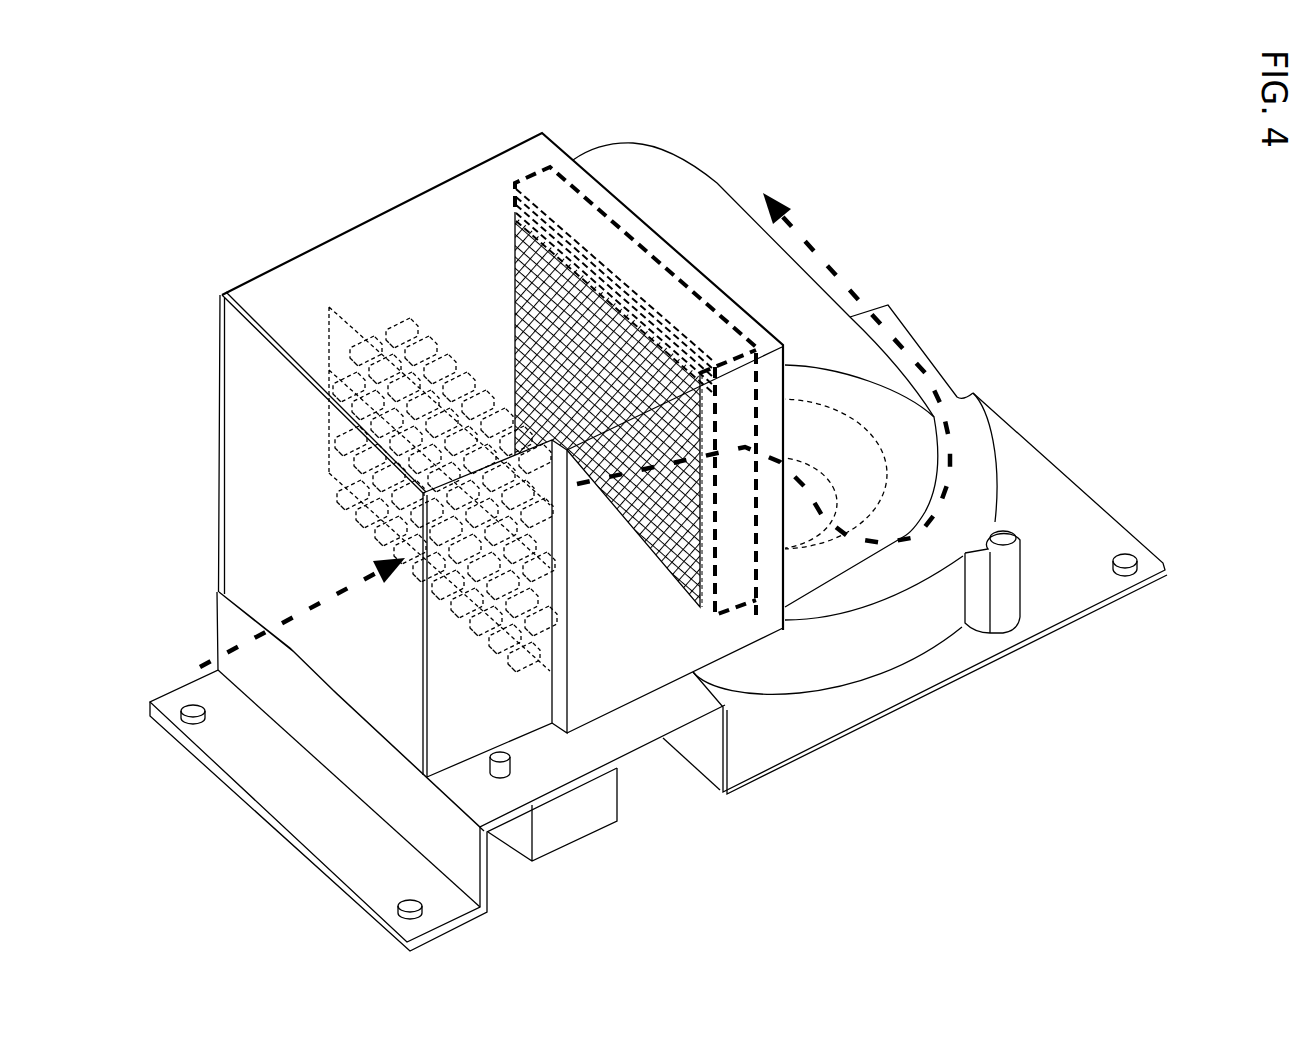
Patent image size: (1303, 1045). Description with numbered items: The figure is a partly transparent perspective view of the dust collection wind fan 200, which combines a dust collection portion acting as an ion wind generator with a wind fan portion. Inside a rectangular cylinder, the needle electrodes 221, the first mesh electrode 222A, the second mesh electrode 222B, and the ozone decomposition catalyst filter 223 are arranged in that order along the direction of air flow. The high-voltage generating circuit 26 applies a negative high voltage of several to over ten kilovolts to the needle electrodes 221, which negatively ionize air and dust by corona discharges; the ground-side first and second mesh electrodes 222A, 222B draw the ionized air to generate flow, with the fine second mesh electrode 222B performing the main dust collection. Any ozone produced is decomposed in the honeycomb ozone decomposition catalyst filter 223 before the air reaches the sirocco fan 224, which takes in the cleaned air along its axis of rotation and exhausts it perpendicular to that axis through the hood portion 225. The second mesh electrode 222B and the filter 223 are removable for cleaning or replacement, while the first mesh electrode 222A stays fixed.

The dust collection wind fan 200 is at (347, 139).
The needle electrodes 221 is at (337, 307).
The first mesh electrode 222A is at (513, 182).
The second mesh electrode 222B is at (541, 202).
The ozone decomposition catalyst filter 223 is at (568, 198).
The sirocco fan 224 is at (967, 428).
The hood portion 225 is at (690, 170).
The high-voltage generating circuit 26 is at (580, 830).